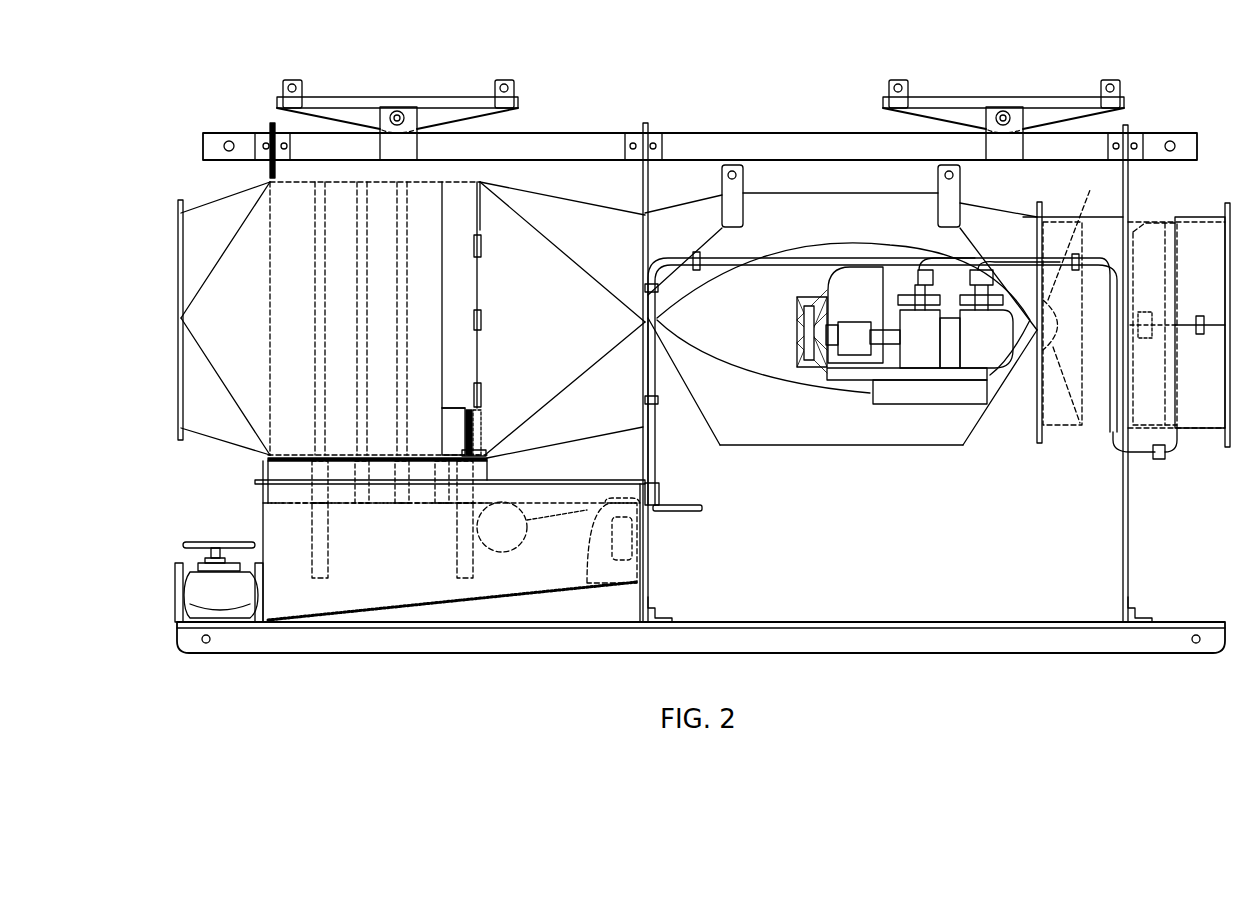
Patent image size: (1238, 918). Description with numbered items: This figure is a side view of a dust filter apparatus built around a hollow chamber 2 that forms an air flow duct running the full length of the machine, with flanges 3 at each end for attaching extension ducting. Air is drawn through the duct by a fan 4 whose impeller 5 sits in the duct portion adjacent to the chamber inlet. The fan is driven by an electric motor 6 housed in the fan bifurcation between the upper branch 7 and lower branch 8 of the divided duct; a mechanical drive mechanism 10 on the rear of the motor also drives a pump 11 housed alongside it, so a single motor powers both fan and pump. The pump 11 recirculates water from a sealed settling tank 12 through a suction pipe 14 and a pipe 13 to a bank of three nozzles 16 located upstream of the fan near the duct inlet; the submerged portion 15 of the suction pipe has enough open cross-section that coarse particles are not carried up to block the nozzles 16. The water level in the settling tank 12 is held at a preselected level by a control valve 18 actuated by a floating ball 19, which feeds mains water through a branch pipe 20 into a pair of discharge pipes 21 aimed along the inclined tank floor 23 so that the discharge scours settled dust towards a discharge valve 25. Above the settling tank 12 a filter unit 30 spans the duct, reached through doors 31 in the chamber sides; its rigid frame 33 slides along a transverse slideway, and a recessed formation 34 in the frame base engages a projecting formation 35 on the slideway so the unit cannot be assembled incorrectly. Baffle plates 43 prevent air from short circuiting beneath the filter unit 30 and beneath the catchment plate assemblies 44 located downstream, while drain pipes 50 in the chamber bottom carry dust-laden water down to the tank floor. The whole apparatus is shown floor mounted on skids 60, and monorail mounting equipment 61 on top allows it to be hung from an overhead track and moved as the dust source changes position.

The hollow chamber 2 is at (793, 185).
The flanges 3 is at (178, 200).
The fan 4 is at (1003, 400).
The impeller 5 is at (1090, 190).
The electric motor 6 is at (857, 300).
The upper branch 7 is at (874, 210).
The lower branch 8 is at (930, 428).
The mechanical drive mechanism 10 is at (812, 372).
The pump 11 is at (868, 342).
The settling tank 12 is at (395, 595).
The pipe 13 is at (1115, 363).
The suction pipe 14 is at (658, 443).
The submerged portion of suction pipe 15 is at (640, 545).
The nozzles 16 is at (1147, 332).
The control valve 18 is at (645, 512).
The floating ball 19 is at (500, 540).
The branch pipe 20 is at (704, 508).
The discharge pipes 21 is at (595, 585).
The inclined tank floor 23 is at (540, 590).
The discharge valve 25 is at (232, 600).
The filter unit 30 is at (478, 422).
The doors 31 is at (463, 202).
The rigid frame 33 is at (476, 412).
The recessed formation 34 is at (470, 447).
The projecting formation 35 is at (466, 455).
The baffle plates 43 is at (262, 470).
The catchment plate assemblies 44 is at (320, 215).
The drain pipes 50 is at (320, 565).
The skids 60 is at (863, 615).
The monorail mounting equipment 61 is at (447, 92).